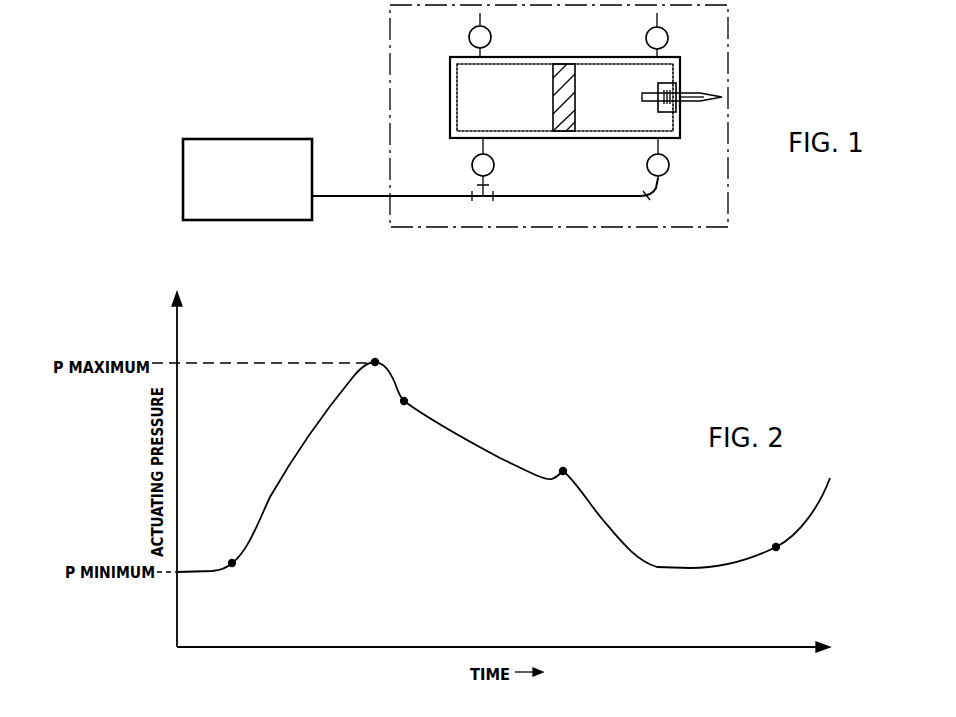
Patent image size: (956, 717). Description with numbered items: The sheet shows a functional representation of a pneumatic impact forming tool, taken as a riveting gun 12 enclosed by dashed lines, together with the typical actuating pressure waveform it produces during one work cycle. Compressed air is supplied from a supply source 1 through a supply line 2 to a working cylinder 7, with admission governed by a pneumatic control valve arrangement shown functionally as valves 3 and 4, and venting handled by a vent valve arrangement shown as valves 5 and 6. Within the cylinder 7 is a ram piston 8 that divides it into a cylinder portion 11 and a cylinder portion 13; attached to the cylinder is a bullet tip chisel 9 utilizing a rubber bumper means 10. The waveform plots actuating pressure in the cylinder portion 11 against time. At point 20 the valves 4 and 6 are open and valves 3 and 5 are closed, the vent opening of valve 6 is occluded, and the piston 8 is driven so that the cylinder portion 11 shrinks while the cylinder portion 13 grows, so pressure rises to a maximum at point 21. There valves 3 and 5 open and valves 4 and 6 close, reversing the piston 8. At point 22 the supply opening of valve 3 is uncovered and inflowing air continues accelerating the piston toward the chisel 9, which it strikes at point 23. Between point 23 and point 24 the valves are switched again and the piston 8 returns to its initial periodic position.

In FIG. 1, the supply source 1 is at (303, 161).
In FIG. 1, the supply line 2 is at (343, 193).
In FIG. 1, the pneumatic control valve 3 is at (494, 165).
In FIG. 1, the pneumatic control valve 4 is at (669, 165).
In FIG. 1, the vent valve 5 is at (668, 38).
In FIG. 1, the vent valve 6 is at (491, 37).
In FIG. 1, the working cylinder 7 is at (535, 138).
In FIG. 1, the piston 8 is at (565, 65).
In FIG. 1, the bullet tip chisel 9 is at (699, 101).
In FIG. 1, the rubber bumper means 10 is at (657, 85).
In FIG. 1, the cylinder portion 11 is at (465, 105).
In FIG. 1, the pneumatic riveting gun 12 is at (698, 216).
In FIG. 1, the cylinder portion 13 is at (623, 120).
In FIG. 2, the waveform point 20 is at (229, 556).
In FIG. 2, the waveform point 21 is at (378, 362).
In FIG. 2, the waveform point 22 is at (407, 401).
In FIG. 2, the waveform point 23 is at (566, 471).
In FIG. 2, the waveform point 24 is at (779, 548).